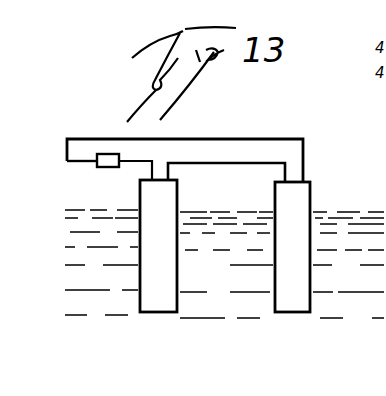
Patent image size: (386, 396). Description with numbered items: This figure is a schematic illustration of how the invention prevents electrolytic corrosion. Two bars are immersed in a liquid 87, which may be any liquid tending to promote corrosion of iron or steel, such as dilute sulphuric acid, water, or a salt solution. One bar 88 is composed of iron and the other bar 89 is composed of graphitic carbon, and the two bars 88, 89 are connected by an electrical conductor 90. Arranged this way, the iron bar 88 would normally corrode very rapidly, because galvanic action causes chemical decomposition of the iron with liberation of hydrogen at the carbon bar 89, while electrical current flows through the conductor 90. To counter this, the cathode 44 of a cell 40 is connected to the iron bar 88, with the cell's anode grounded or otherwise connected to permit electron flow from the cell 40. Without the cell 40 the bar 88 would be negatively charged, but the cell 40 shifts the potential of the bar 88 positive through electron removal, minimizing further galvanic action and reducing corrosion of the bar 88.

The cell 40 is at (104, 167).
The cathode 44 is at (137, 163).
The liquid 87 is at (345, 238).
The bar 88 is at (177, 271).
The bar 89 is at (310, 277).
The electrical conductor 90 is at (253, 164).